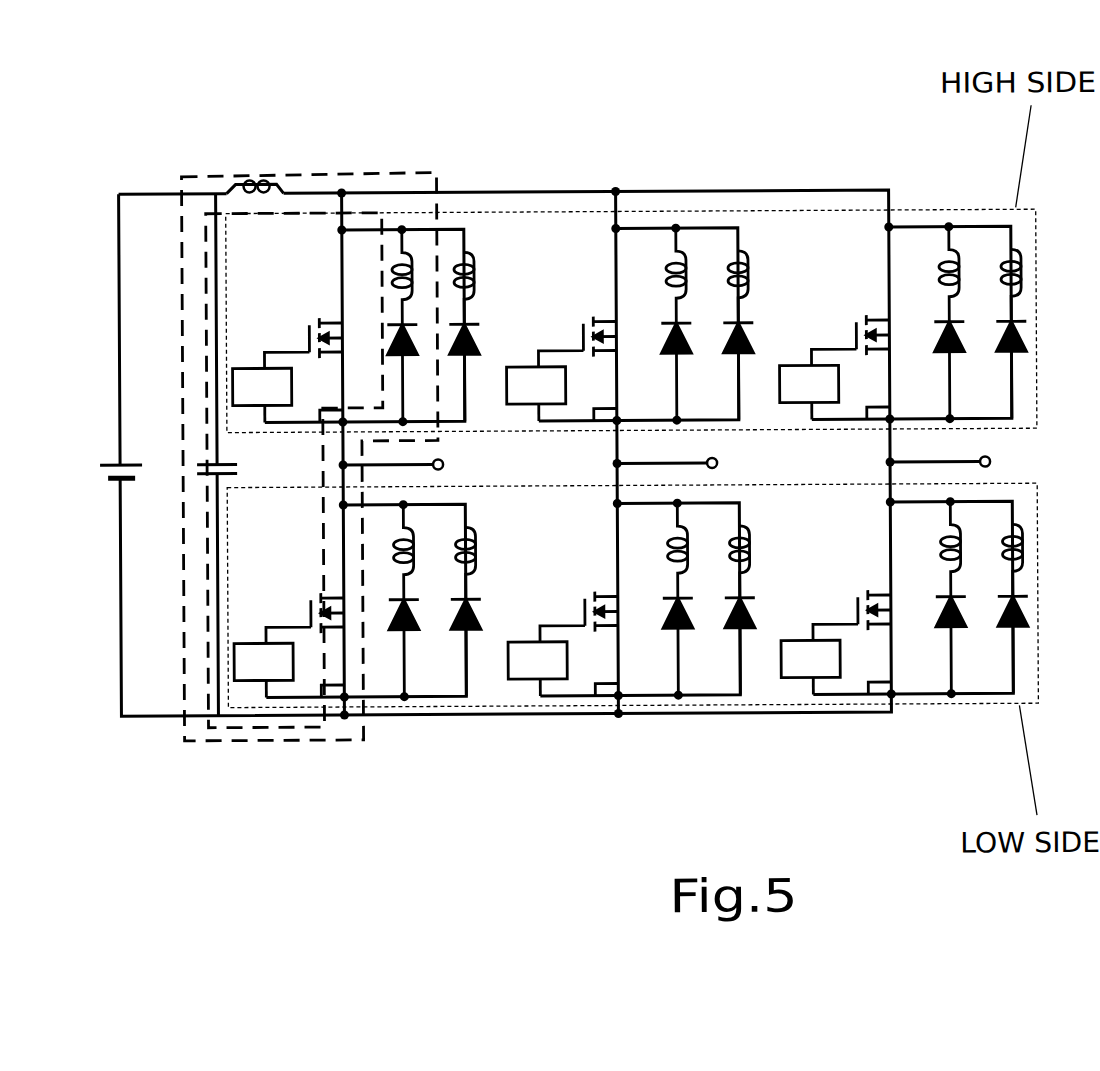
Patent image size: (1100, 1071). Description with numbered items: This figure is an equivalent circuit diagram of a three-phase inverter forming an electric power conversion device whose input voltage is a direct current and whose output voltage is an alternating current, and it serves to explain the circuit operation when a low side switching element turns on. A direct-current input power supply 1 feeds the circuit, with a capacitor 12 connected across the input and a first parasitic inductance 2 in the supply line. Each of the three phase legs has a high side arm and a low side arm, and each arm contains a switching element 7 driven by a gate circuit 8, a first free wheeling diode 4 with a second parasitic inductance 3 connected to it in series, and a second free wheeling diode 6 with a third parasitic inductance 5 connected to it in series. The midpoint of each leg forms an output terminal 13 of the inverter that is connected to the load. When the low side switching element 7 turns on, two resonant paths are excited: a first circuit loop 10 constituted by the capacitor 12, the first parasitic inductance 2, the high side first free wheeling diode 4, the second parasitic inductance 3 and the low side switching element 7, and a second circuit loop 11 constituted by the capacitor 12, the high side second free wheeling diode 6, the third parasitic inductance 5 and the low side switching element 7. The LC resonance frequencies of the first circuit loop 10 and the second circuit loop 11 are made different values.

The input power supply 1 is at (97, 467).
The first parasitic inductance 2 is at (253, 180).
The second parasitic inductance 3 is at (649, 453).
The first free wheeling diode 4 is at (626, 453).
The third parasitic inductance 5 is at (723, 452).
The second free wheeling diode 6 is at (705, 452).
The switching element 7 is at (573, 453).
The gate circuit 8 is at (519, 453).
The first circuit loop 10 is at (203, 218).
The second circuit loop 11 is at (198, 176).
The capacitor 12 is at (195, 468).
The output terminal 13 is at (450, 464).